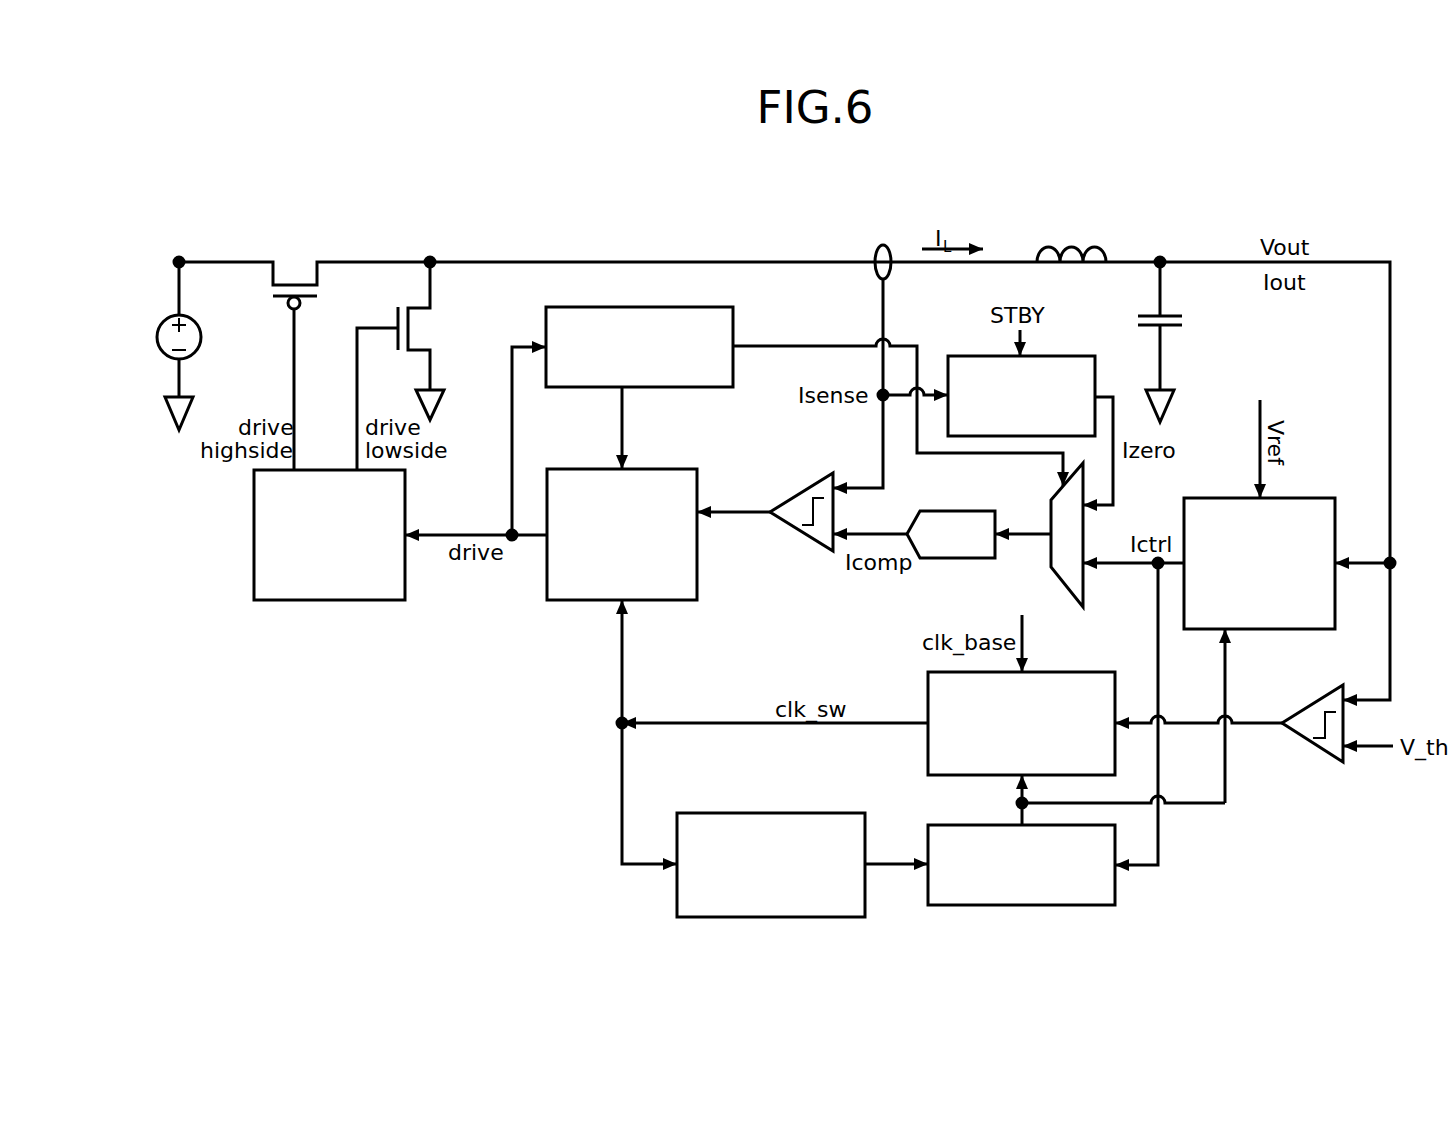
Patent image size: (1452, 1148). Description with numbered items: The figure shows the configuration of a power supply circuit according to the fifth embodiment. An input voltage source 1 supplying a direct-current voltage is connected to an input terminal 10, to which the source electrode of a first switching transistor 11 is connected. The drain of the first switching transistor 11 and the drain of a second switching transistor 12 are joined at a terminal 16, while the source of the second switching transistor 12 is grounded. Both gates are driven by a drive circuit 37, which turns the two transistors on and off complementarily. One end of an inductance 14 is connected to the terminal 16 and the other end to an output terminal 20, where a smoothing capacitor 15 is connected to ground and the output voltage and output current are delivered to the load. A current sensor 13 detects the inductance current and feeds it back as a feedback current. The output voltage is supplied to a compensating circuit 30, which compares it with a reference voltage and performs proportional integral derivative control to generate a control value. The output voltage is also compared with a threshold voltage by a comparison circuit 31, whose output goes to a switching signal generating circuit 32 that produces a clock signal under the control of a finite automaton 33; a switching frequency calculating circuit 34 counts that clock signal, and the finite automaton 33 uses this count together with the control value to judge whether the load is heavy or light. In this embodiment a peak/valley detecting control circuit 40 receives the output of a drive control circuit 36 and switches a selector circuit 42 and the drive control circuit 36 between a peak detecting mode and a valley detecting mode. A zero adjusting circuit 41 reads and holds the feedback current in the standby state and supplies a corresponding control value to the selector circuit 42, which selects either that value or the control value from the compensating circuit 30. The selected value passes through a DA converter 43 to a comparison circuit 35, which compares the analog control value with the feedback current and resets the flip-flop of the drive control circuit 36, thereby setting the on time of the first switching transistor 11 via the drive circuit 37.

The input voltage source 1 is at (203, 340).
The input terminal 10 is at (179, 258).
The first switching transistor 11 is at (296, 258).
The second switching transistor 12 is at (435, 331).
The current sensor 13 is at (883, 244).
The inductance 14 is at (1073, 246).
The smoothing capacitor 15 is at (1192, 322).
The terminal 16 is at (432, 258).
The output terminal 20 is at (1160, 257).
The compensating circuit 30 is at (1221, 494).
The comparison circuit 31 is at (1318, 764).
The switching signal generating circuit 32 is at (1078, 670).
The finite automaton 33 is at (978, 823).
The switching frequency calculating circuit 34 is at (772, 812).
The comparison circuit 35 is at (803, 553).
The drive control circuit 36 is at (577, 602).
The drive circuit 37 is at (323, 468).
The peak/valley detecting control circuit 40 is at (677, 389).
The zero adjusting circuit 41 is at (963, 356).
The selector circuit 42 is at (1055, 584).
The DA converter 43 is at (955, 560).